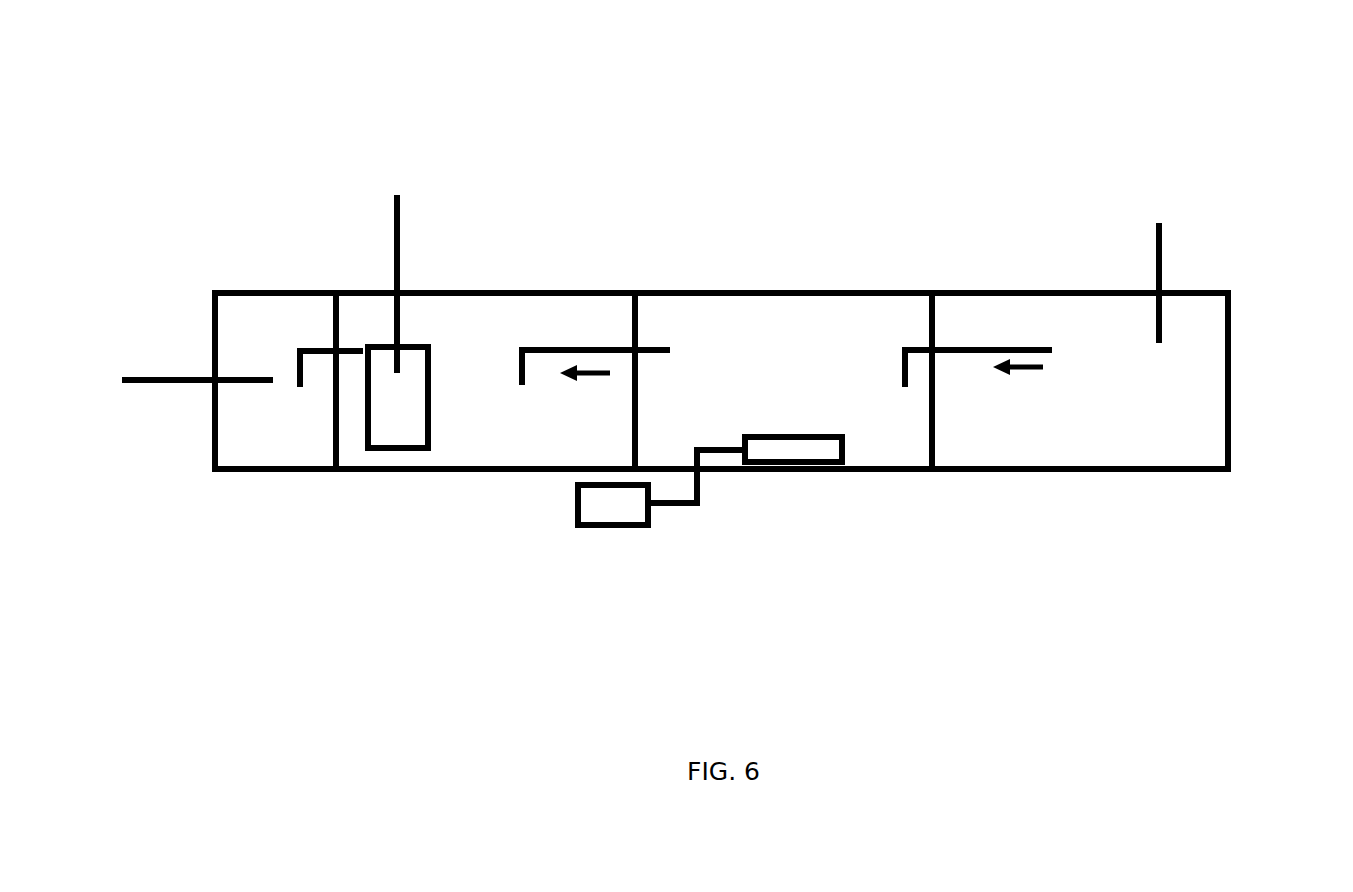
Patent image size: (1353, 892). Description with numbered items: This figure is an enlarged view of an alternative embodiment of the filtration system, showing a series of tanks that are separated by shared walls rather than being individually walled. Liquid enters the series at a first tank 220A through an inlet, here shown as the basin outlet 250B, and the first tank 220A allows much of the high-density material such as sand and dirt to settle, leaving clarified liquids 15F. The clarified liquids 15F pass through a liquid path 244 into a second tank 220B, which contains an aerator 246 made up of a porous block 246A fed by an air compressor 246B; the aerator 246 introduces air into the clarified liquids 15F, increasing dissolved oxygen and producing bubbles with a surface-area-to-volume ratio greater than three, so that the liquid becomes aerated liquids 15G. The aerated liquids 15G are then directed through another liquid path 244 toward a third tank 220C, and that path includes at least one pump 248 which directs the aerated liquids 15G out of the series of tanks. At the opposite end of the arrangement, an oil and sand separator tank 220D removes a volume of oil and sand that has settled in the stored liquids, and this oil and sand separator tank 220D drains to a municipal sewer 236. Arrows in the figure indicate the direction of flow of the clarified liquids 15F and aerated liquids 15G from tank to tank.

The first tank 220A is at (1105, 320).
The second tank 220B is at (895, 456).
The third tank 220C is at (480, 320).
The oil and sand separator tank 220D is at (255, 320).
The liquid path 244 is at (297, 320).
The municipal sewer 236 is at (185, 401).
The pump 248 is at (392, 469).
The aerated liquids 15G is at (578, 401).
The clarified liquids 15F is at (1008, 393).
The basin outlet 250B is at (1192, 272).
The aerator 246 is at (738, 550).
The porous block 246A is at (798, 465).
The air compressor 246B is at (626, 542).